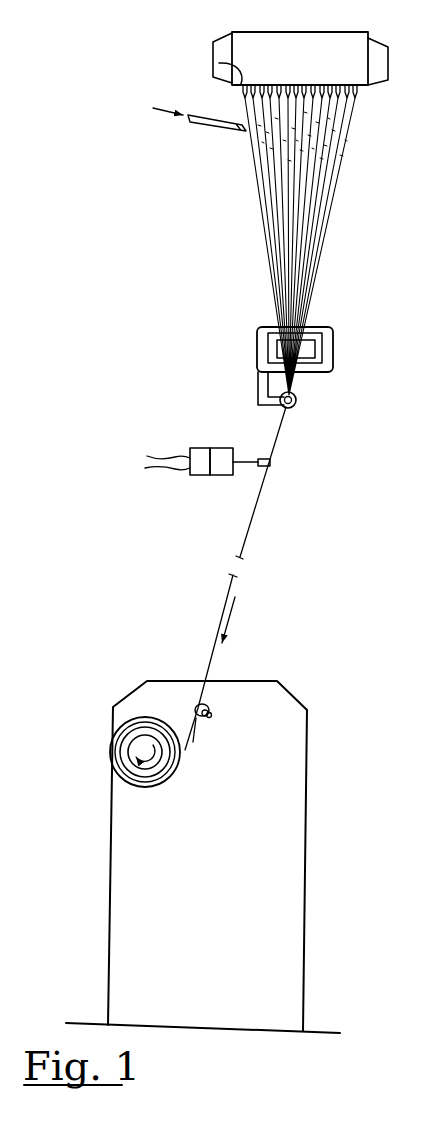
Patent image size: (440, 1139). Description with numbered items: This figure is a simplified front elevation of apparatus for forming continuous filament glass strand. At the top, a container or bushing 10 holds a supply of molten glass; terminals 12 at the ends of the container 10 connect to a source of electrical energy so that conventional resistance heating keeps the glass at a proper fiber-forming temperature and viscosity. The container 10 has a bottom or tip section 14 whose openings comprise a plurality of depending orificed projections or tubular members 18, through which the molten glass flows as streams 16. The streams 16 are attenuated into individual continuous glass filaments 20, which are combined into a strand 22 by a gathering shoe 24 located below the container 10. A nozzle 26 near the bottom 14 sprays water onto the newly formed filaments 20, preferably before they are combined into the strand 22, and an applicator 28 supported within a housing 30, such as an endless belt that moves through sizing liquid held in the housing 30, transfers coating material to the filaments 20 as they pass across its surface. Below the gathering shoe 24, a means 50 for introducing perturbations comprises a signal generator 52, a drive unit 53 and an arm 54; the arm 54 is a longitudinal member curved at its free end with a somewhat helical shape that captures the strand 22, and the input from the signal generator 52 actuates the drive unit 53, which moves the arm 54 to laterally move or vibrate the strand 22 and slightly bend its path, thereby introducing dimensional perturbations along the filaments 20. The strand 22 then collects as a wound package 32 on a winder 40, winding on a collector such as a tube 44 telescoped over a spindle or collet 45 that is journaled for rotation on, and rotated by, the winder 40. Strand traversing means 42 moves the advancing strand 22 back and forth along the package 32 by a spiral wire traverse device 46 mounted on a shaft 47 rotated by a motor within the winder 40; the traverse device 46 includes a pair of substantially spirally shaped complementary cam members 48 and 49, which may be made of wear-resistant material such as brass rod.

The container or bushing 10 is at (226, 28).
The terminals 12 is at (217, 48).
The bottom or tip section 14 is at (219, 63).
The streams of molten glass 16 is at (320, 100).
The tubular members 18 is at (242, 88).
The continuous glass filaments 20 is at (320, 203).
The strand 22 is at (292, 426).
The gathering shoe 24 is at (297, 398).
The nozzle 26 is at (228, 130).
The applicator 28 is at (277, 343).
The housing 30 is at (270, 327).
The wound package 32 is at (112, 753).
The winder 40 is at (310, 706).
The strand traversing means 42 is at (215, 698).
The tube 44 is at (123, 777).
The spindle or collet 45 is at (127, 745).
The spiral wire traverse device 46 is at (221, 718).
The shaft 47 is at (197, 722).
The cam member 48 is at (211, 703).
The cam member 49 is at (210, 721).
The means for introducing perturbations 50 is at (186, 446).
The signal generator 52 is at (201, 447).
The drive unit 53 is at (227, 477).
The arm 54 is at (266, 460).